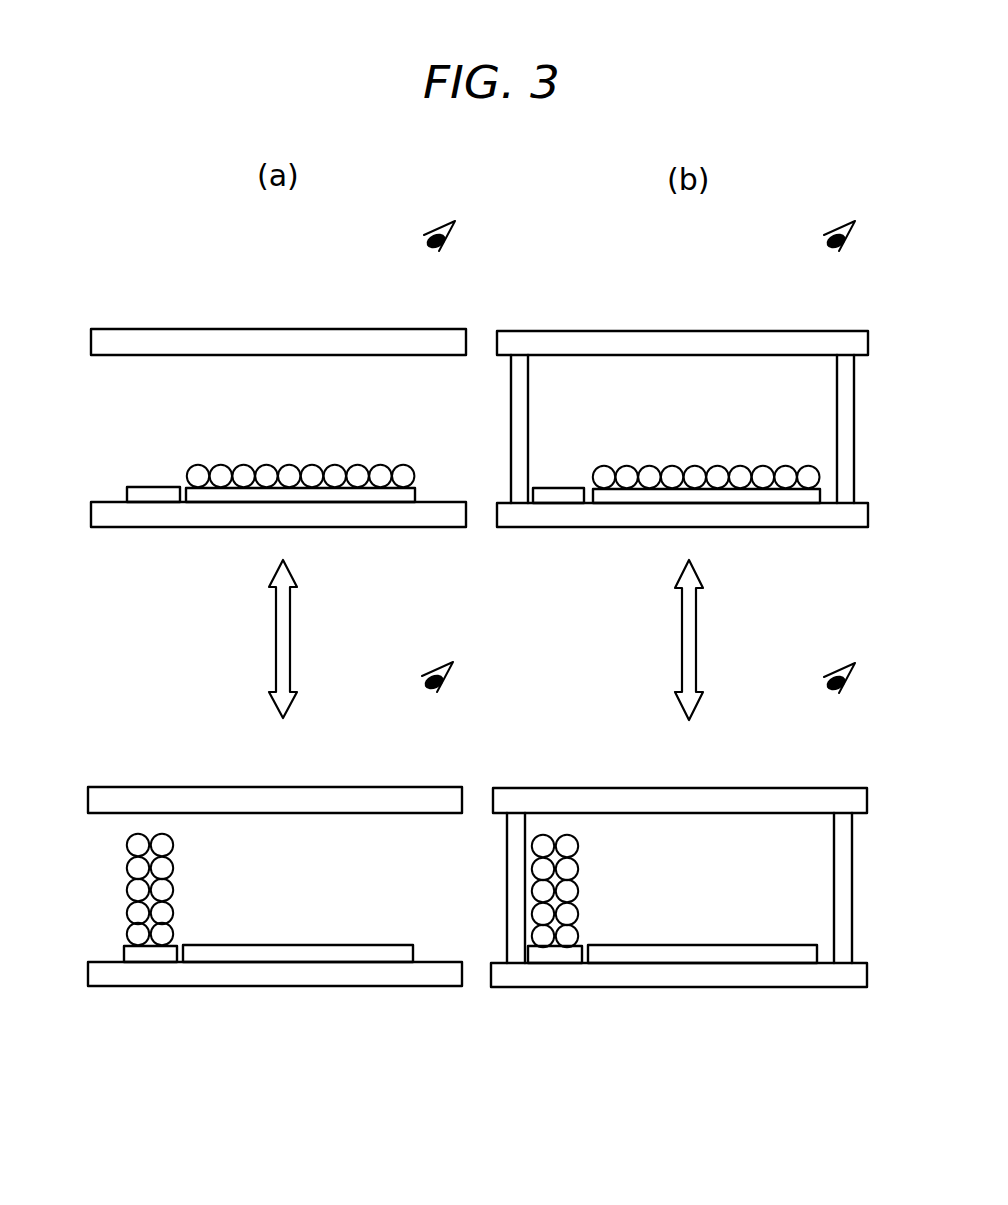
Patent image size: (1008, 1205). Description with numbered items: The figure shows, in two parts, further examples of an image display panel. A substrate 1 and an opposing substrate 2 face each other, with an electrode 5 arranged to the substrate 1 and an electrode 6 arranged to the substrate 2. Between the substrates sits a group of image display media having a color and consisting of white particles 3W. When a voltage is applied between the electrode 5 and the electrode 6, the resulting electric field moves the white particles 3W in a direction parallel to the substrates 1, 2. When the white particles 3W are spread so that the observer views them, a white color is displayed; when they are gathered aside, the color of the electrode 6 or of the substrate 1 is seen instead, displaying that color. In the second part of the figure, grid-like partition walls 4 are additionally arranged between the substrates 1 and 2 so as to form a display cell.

The substrate 1 is at (233, 517).
The substrate 2 is at (301, 342).
The white particle 3W is at (405, 470).
The partition wall 4 is at (522, 423).
The electrode 5 is at (150, 498).
The electrode 6 is at (379, 497).